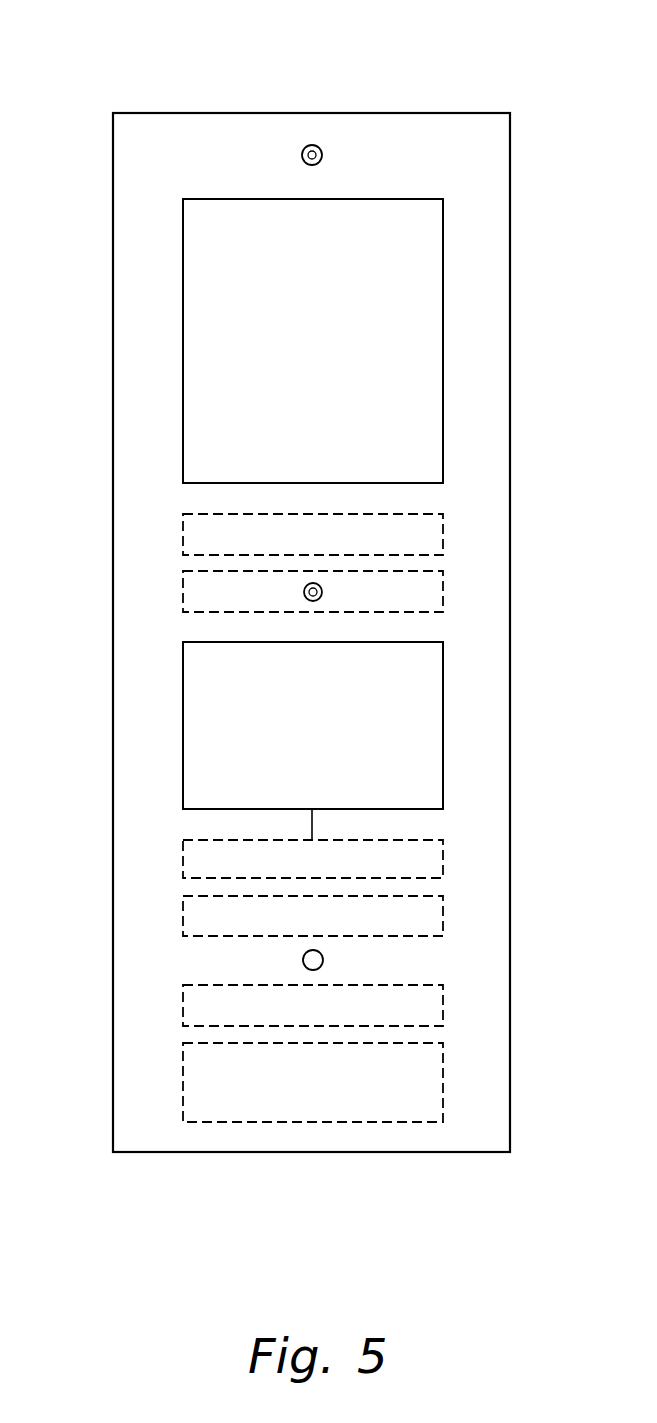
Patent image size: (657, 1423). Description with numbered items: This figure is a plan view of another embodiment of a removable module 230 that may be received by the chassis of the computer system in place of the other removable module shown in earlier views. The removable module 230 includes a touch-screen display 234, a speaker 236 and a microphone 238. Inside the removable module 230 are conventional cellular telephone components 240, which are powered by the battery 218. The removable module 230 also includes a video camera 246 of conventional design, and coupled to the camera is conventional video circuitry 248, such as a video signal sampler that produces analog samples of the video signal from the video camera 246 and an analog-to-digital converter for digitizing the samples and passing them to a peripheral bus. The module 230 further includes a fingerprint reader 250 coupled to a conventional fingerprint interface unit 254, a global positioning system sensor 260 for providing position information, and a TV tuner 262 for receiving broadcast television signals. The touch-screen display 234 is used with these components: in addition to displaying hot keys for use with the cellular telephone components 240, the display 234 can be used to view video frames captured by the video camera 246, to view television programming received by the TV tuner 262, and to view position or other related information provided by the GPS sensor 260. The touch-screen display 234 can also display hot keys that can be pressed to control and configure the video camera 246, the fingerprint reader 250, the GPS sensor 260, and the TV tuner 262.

The removable module 230 is at (512, 226).
The speaker 236 is at (318, 144).
The touch-screen display 234 is at (425, 336).
The cellular telephone components 240 is at (427, 532).
The video circuitry 248 is at (427, 596).
The video camera 246 is at (304, 592).
The fingerprint reader 250 is at (430, 722).
The fingerprint interface unit 254 is at (440, 852).
The GPS sensor 260 is at (432, 915).
The microphone 238 is at (323, 958).
The TV tuner 262 is at (427, 1010).
The battery 218 is at (435, 1091).